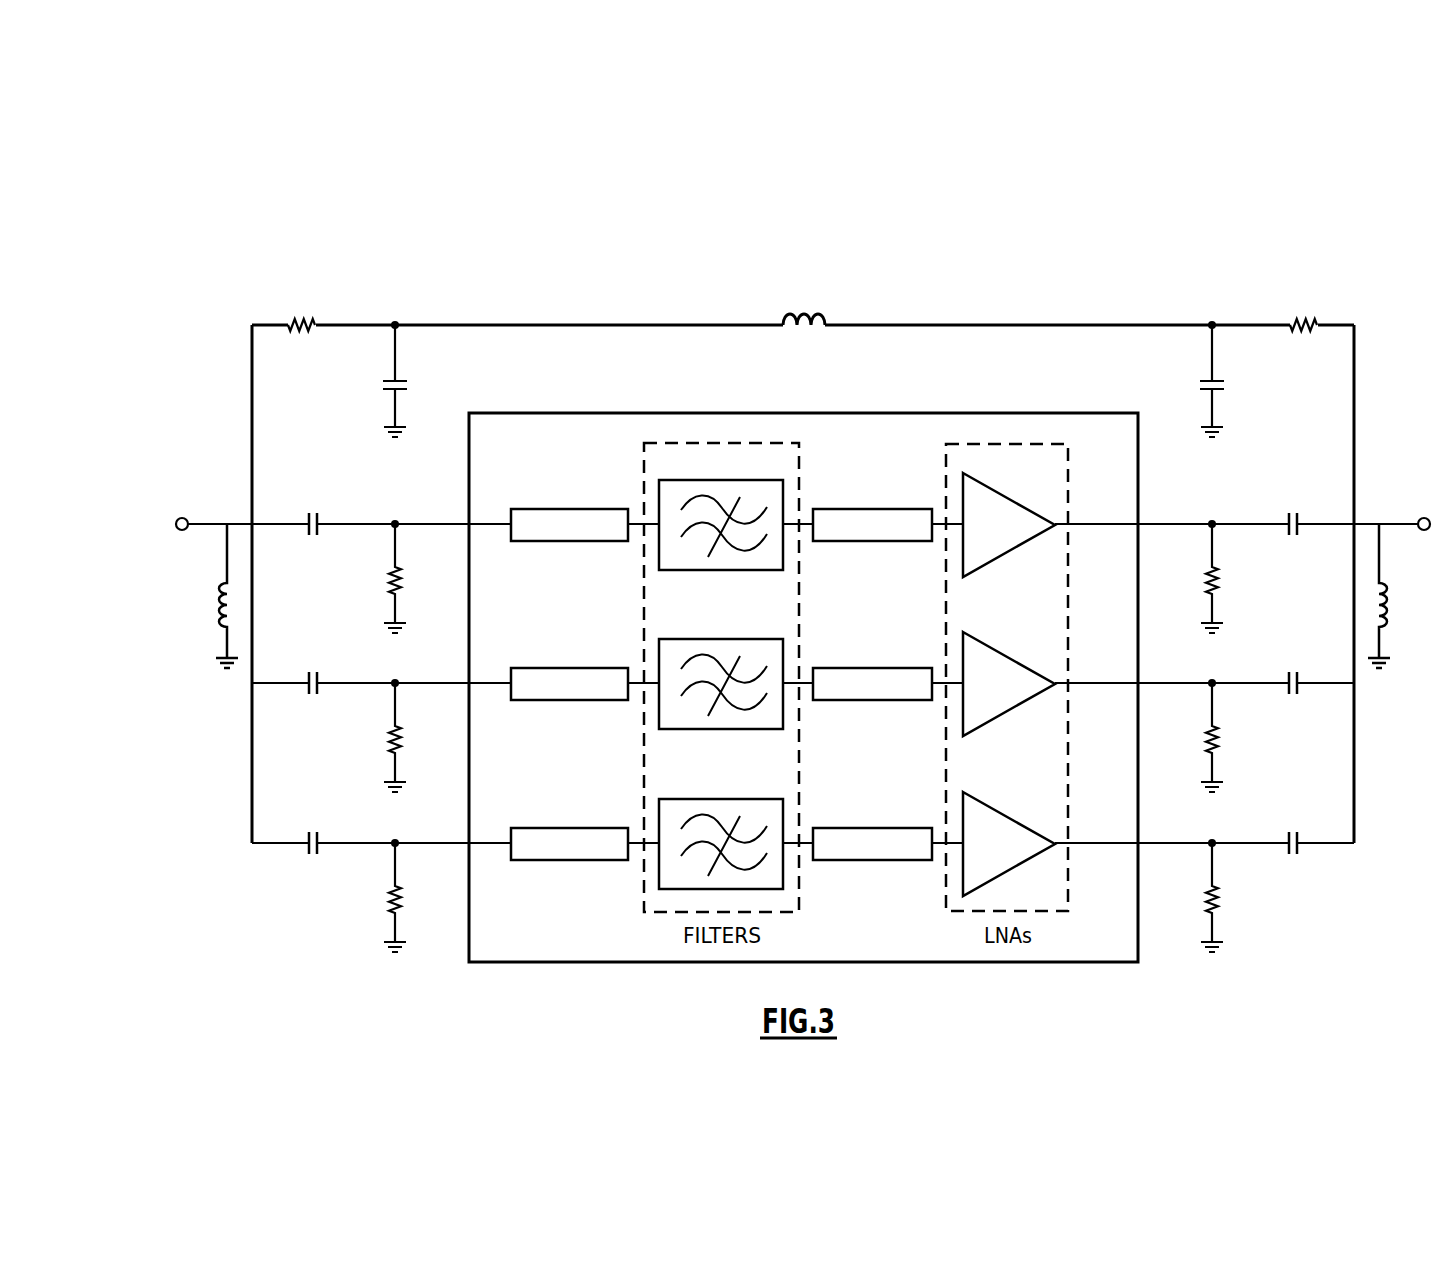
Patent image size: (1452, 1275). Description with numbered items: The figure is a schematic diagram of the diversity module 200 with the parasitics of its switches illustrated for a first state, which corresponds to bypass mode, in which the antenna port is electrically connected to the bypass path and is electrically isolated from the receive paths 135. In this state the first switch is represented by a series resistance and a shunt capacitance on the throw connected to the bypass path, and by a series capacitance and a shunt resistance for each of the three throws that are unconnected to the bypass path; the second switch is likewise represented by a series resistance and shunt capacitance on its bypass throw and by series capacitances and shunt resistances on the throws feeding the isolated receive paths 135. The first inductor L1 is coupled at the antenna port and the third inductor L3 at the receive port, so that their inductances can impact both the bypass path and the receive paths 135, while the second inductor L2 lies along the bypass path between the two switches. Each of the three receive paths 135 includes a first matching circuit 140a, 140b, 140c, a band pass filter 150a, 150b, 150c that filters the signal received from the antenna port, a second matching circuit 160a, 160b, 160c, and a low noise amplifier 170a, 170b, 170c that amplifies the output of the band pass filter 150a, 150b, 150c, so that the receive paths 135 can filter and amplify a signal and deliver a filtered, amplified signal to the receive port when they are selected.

The diversity module 200 is at (232, 262).
The receive paths 135 is at (879, 413).
The first matching circuit 140a is at (549, 509).
The first matching circuit 140b is at (549, 668).
The first matching circuit 140c is at (549, 828).
The band pass filter 150a is at (784, 492).
The band pass filter 150b is at (784, 651).
The band pass filter 150c is at (784, 811).
The second matching circuit 160a is at (868, 509).
The second matching circuit 160b is at (868, 668).
The second matching circuit 160c is at (868, 828).
The low noise amplifier 170a is at (997, 489).
The low noise amplifier 170b is at (997, 648).
The low noise amplifier 170c is at (997, 808).
The first inductor L1 is at (209, 596).
The second inductor L2 is at (804, 344).
The third inductor L3 is at (1398, 596).